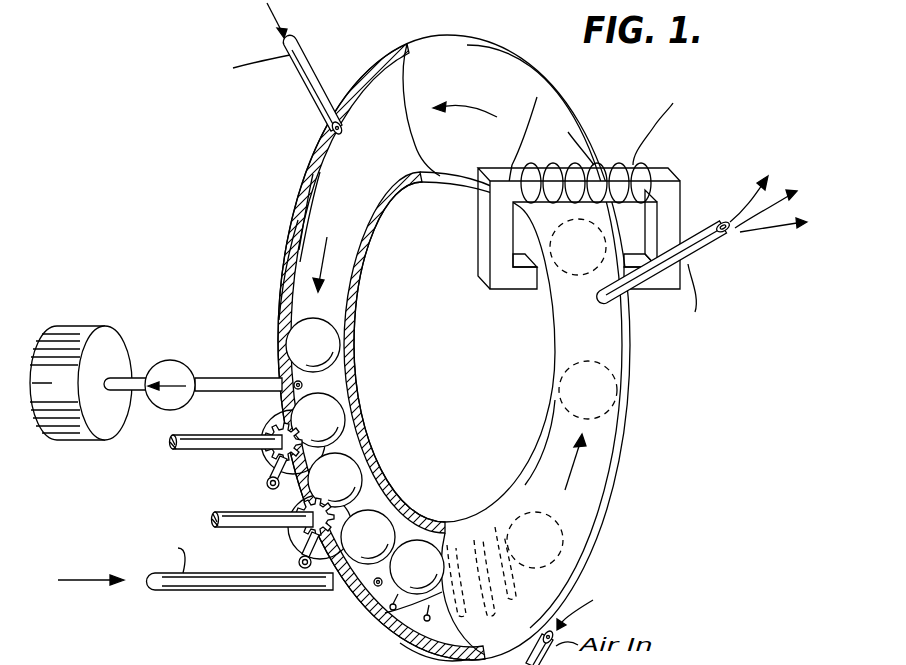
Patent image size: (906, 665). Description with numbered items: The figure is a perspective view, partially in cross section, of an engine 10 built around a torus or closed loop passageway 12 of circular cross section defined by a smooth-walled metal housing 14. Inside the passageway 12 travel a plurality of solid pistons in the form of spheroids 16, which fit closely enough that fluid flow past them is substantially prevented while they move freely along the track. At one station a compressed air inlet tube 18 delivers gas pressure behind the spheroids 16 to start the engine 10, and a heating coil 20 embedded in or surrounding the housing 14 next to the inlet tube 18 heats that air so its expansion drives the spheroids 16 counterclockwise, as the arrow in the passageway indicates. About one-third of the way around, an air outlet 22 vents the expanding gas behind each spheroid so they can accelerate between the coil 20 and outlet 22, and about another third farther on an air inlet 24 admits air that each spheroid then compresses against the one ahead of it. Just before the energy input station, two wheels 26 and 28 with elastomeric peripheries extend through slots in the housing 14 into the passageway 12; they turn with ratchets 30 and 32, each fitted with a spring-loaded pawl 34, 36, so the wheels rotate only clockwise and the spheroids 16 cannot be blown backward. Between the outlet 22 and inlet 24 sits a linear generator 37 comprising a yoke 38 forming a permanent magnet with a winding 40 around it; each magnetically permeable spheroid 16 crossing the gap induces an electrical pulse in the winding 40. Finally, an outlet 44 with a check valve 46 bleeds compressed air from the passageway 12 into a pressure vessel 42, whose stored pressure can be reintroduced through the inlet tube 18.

The engine 10 is at (640, 390).
The closed loop passageway 12 is at (410, 532).
The housing 14 is at (283, 303).
The spheroids 16 is at (347, 423).
The compressed air inlet tube 18 is at (242, 586).
The heating coil 20 is at (413, 650).
The air outlet 22 is at (708, 246).
The air inlet 24 is at (313, 72).
The wheel 26 is at (280, 414).
The wheel 28 is at (332, 522).
The ratchet 30 is at (270, 456).
The ratchet 32 is at (300, 533).
The spring-loaded pawl 34 is at (266, 473).
The spring-loaded pawl 36 is at (298, 550).
The linear generator 37 is at (603, 192).
The yoke 38 is at (650, 170).
The winding 40 is at (568, 165).
The pressure vessel 42 is at (72, 328).
The outlet 44 is at (140, 380).
The check valve 46 is at (190, 372).